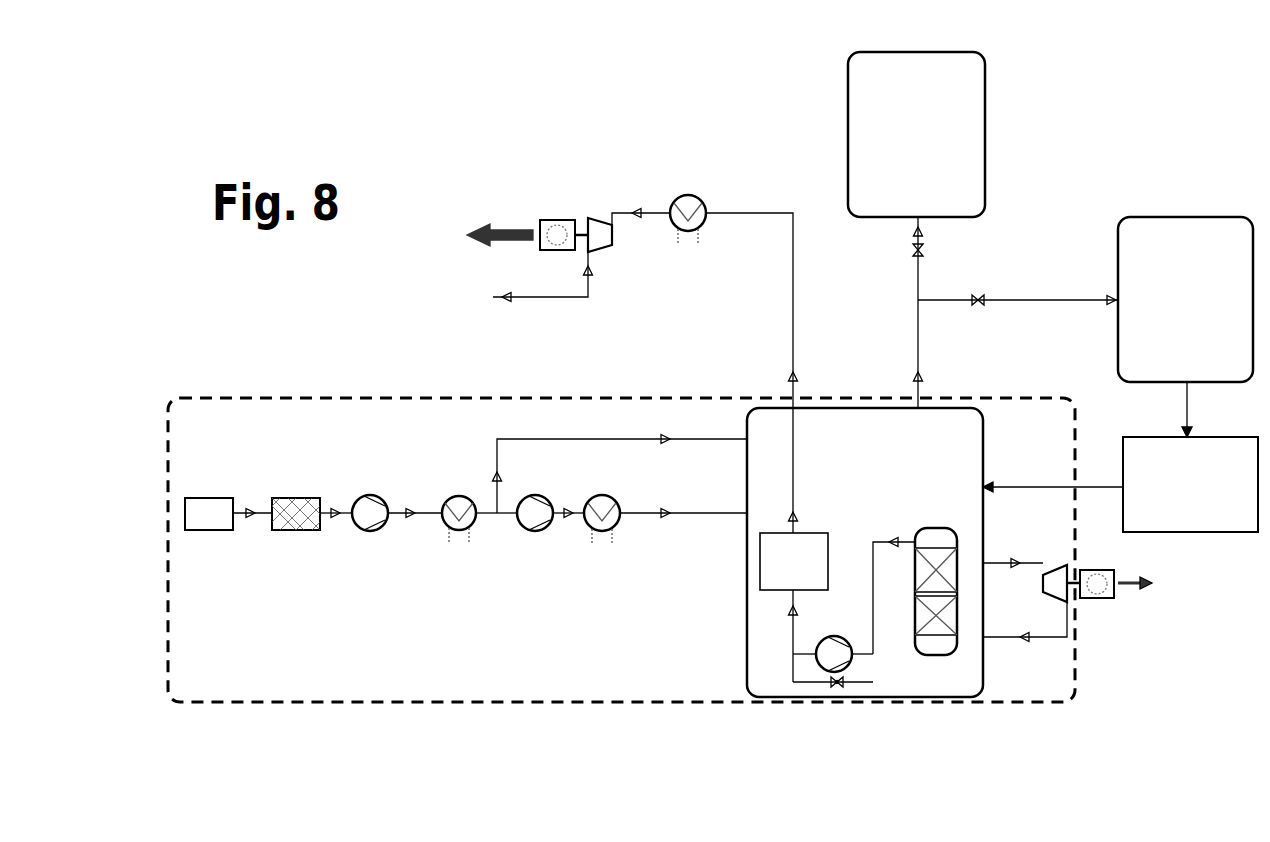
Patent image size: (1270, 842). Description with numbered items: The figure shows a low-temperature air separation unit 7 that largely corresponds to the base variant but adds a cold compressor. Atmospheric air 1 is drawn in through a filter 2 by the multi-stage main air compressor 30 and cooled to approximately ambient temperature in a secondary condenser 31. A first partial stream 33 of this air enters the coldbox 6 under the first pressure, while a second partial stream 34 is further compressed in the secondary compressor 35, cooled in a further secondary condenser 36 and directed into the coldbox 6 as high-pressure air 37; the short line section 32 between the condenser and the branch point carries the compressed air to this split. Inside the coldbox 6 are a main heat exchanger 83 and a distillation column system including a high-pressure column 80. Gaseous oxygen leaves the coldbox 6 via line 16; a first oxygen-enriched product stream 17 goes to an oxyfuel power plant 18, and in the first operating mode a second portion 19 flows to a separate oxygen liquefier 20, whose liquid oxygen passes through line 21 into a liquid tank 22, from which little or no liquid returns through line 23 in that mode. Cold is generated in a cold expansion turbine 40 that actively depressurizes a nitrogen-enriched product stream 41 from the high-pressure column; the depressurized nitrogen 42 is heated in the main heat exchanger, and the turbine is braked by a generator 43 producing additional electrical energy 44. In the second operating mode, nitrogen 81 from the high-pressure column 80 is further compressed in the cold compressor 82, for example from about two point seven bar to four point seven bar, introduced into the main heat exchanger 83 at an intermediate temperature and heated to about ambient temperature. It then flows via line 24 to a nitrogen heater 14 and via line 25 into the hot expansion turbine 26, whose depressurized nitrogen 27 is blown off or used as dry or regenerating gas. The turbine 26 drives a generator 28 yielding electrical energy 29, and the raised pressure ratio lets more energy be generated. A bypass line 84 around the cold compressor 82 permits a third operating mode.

The atmospheric air 1 is at (216, 531).
The filter 2 is at (302, 531).
The coldbox 6 is at (865, 552).
The low-temperature air separation unit 7 is at (372, 702).
The nitrogen heater 14 is at (688, 195).
The line 16 is at (916, 341).
The first oxygen-enriched product stream 17 is at (916, 280).
The oxyfuel power plant 18 is at (916, 134).
The second portion of the oxygen product 19 is at (1058, 302).
The oxygen liquefier 20 is at (1185, 299).
The line 21 is at (1184, 406).
The liquid tank 22 is at (1190, 484).
The line 23 is at (1098, 487).
The line 24 is at (792, 262).
The line 25 is at (628, 212).
The hot expansion turbine 26 is at (614, 242).
The actively depressurized nitrogen 27 is at (588, 299).
The generator 28 is at (558, 220).
The electrical energy 29 is at (511, 231).
The main air compressor 30 is at (372, 531).
The secondary condenser 31 is at (458, 530).
The line section 32 is at (487, 516).
The first partial stream 33 is at (562, 441).
The second partial stream 34 is at (512, 516).
The secondary compressor 35 is at (539, 531).
The secondary condenser 36 is at (601, 532).
The high-pressure air 37 is at (686, 516).
The cold expansion turbine 40 is at (1062, 569).
The nitrogen-enriched product stream 41 is at (1018, 563).
The actively depressurized nitrogen 42 is at (1050, 638).
The generator 43 is at (1106, 570).
The electrical energy 44 is at (1144, 582).
The high-pressure column 80 is at (950, 528).
The nitrogen 81 is at (888, 542).
The cold compressor 82 is at (838, 636).
The main heat exchanger 83 is at (830, 533).
The bypass line 84 is at (874, 682).